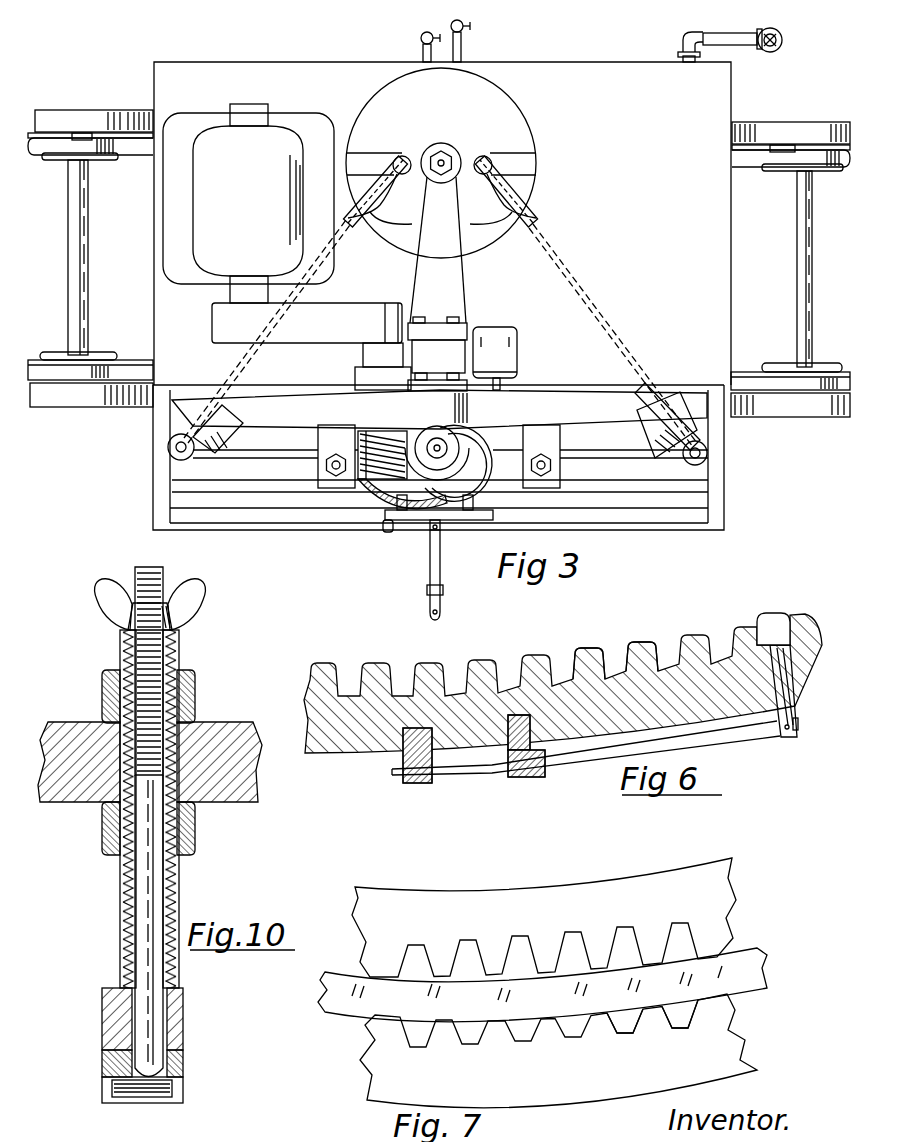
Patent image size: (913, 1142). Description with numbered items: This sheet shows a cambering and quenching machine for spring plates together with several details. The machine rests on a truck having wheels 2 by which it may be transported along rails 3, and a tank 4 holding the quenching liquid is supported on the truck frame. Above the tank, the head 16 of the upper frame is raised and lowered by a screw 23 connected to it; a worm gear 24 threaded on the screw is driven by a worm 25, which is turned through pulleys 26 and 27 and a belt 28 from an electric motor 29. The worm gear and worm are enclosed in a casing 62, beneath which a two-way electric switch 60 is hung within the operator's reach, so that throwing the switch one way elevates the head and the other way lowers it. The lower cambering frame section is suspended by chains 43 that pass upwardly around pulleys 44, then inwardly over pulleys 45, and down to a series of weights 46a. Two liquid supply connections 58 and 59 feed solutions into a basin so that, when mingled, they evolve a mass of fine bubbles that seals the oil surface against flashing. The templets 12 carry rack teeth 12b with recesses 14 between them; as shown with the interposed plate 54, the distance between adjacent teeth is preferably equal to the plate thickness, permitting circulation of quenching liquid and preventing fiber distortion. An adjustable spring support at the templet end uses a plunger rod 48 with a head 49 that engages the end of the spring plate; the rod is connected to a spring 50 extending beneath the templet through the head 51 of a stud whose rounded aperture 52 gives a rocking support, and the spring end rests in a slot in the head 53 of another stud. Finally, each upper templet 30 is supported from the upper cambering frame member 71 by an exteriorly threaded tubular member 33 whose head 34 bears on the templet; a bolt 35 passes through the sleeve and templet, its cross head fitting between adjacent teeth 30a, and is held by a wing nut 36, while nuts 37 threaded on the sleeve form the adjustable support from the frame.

In FIG. 3, the wheels 2 is at (97, 147).
In FIG. 3, the rails 3 is at (130, 367).
In FIG. 3, the tank 4 is at (724, 468).
In FIG. 6, the templets 12 is at (563, 690).
In FIG. 7, the templets 12 is at (576, 1051).
In FIG. 6, the rack teeth 12b is at (590, 650).
In FIG. 7, the rack teeth 12b is at (657, 1020).
In FIG. 7, the recesses or depressions 14 is at (578, 1037).
In FIG. 3, the head 16 is at (439, 456).
In FIG. 3, the screw 23 is at (437, 448).
In FIG. 3, the worm gear 24 is at (398, 508).
In FIG. 3, the worm 25 is at (360, 482).
In FIG. 3, the pulley 26 is at (397, 302).
In FIG. 3, the pulley 27 is at (218, 343).
In FIG. 3, the belt 28 is at (307, 323).
In FIG. 3, the electric motor 29 is at (248, 203).
In FIG. 10, the templet 30 is at (183, 1063).
In FIG. 10, the teeth 30a is at (183, 1088).
In FIG. 10, the tubular member 33 is at (167, 893).
In FIG. 10, the head 34 is at (102, 1023).
In FIG. 10, the bolt 35 is at (167, 880).
In FIG. 10, the wing nut 36 is at (143, 613).
In FIG. 10, the nuts 37 is at (103, 685).
In FIG. 3, the chains 43 is at (578, 283).
In FIG. 3, the pulleys 44 is at (198, 452).
In FIG. 3, the pulleys 45 is at (397, 160).
In FIG. 3, the weights 46a is at (441, 195).
In FIG. 6, the plunger rod 48 is at (777, 680).
In FIG. 6, the head 49 is at (773, 613).
In FIG. 6, the spring 50 is at (752, 732).
In FIG. 6, the head 51 is at (540, 780).
In FIG. 6, the stud aperture 52 is at (515, 778).
In FIG. 6, the head 53 is at (415, 784).
In FIG. 7, the plate 54 is at (542, 985).
In FIG. 3, the liquid supply connection 58 is at (420, 48).
In FIG. 3, the liquid supply connection 59 is at (465, 48).
In FIG. 3, the two-way electric switch 60 is at (430, 553).
In FIG. 3, the casing 62 is at (473, 442).
In FIG. 10, the upper cambering frame member 71 is at (213, 723).